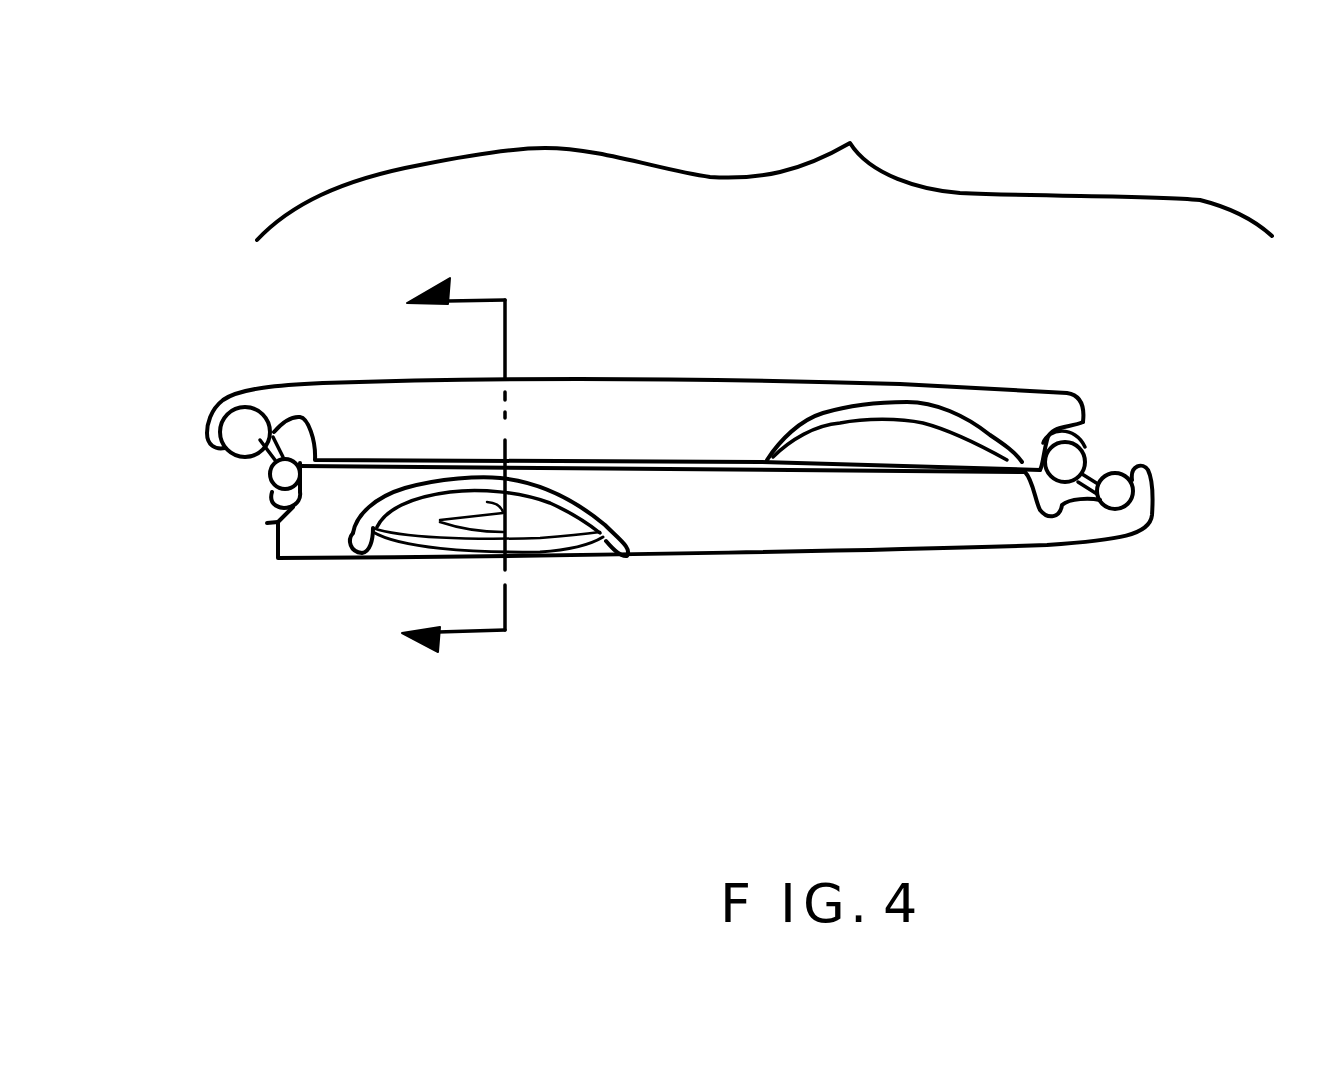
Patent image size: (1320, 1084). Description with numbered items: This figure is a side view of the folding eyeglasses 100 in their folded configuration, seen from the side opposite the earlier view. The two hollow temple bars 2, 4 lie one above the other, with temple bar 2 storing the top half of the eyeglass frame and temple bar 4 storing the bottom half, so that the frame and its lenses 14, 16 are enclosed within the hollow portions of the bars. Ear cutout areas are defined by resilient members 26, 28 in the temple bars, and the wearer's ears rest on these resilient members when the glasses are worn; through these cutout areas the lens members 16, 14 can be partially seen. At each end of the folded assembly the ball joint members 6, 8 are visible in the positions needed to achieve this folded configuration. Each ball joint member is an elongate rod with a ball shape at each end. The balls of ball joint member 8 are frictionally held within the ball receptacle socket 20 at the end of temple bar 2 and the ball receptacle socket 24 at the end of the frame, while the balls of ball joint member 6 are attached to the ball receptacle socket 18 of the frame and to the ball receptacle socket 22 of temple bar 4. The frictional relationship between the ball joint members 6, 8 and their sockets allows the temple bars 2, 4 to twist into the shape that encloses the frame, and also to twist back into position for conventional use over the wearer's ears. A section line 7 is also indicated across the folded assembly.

The eyeglasses 100 is at (764, 169).
The temple bar 2 is at (695, 400).
The temple bar 4 is at (792, 520).
The ball joint member 6 is at (1080, 462).
The section line 7 is at (506, 337).
The ball joint member 8 is at (248, 433).
The lens 14 is at (927, 450).
The lens 16 is at (430, 522).
The ball receptacle socket 18 is at (1083, 437).
The ball receptacle socket 20 is at (213, 408).
The ball receptacle socket 22 is at (1140, 493).
The ball receptacle socket 24 is at (288, 505).
The resilient member 26 is at (911, 401).
The resilient member 28 is at (603, 542).